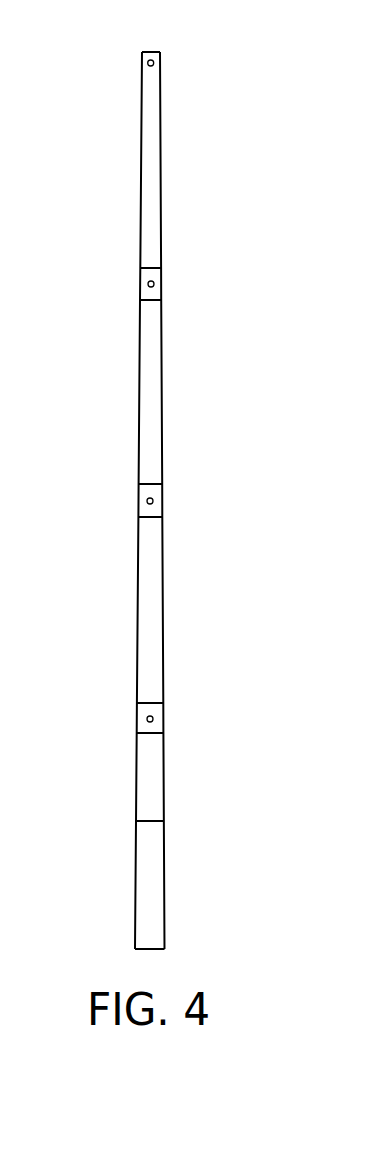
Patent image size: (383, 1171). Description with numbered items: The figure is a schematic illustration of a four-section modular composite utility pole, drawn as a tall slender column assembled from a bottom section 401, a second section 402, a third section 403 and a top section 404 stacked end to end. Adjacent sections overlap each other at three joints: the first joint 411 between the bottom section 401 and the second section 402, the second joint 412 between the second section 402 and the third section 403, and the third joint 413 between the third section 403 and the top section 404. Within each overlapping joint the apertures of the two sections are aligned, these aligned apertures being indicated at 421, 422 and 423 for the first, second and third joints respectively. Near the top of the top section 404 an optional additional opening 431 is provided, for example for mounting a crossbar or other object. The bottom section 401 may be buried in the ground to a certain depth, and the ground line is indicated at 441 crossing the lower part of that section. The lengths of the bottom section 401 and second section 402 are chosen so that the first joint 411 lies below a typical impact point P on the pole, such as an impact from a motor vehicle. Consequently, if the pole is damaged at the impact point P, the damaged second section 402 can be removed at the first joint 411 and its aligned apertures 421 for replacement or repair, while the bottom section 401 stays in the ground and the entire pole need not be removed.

The impact point P is at (152, 500).
The bottom section 401 is at (153, 775).
The second section 402 is at (152, 604).
The third section 403 is at (150, 415).
The top section 404 is at (150, 190).
The first joint 411 is at (143, 726).
The second joint 412 is at (142, 508).
The third joint 413 is at (147, 295).
The aligned apertures of the first joint 421 is at (157, 718).
The aligned apertures of the second joint 422 is at (157, 501).
The aligned apertures of the third joint 423 is at (156, 283).
The additional opening 431 is at (153, 62).
The ground line 441 is at (137, 821).